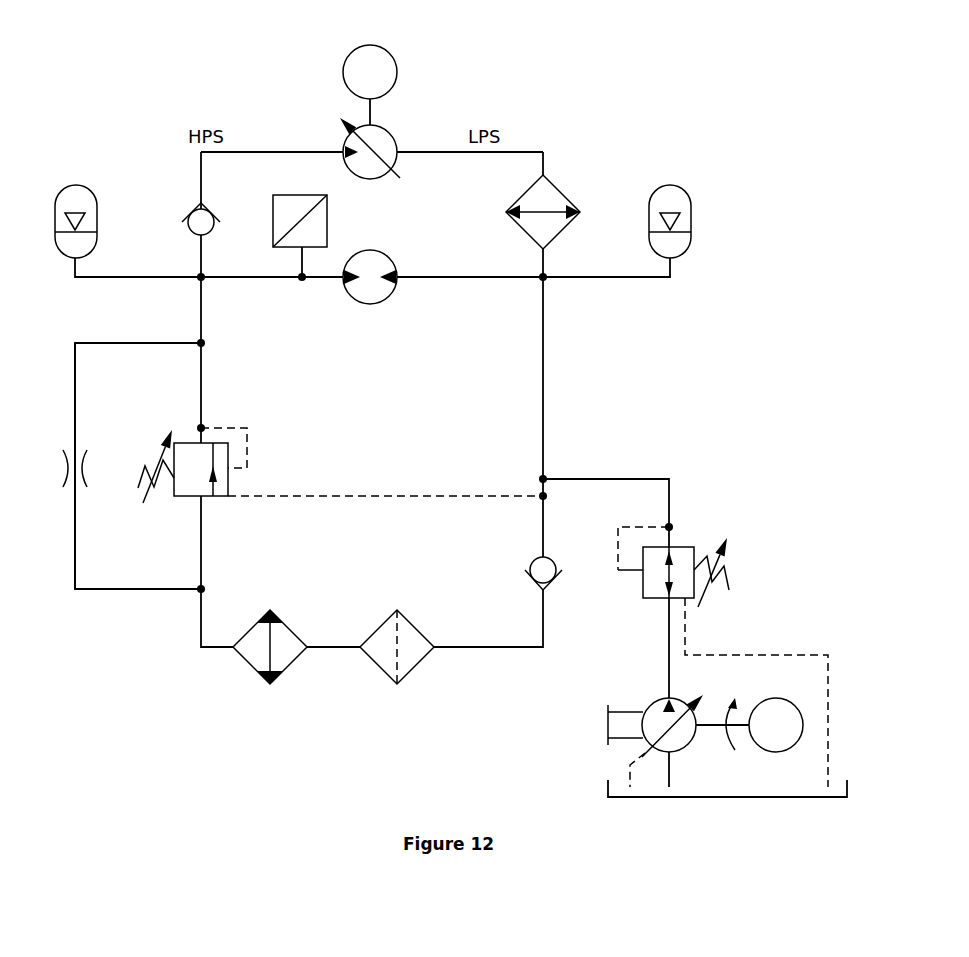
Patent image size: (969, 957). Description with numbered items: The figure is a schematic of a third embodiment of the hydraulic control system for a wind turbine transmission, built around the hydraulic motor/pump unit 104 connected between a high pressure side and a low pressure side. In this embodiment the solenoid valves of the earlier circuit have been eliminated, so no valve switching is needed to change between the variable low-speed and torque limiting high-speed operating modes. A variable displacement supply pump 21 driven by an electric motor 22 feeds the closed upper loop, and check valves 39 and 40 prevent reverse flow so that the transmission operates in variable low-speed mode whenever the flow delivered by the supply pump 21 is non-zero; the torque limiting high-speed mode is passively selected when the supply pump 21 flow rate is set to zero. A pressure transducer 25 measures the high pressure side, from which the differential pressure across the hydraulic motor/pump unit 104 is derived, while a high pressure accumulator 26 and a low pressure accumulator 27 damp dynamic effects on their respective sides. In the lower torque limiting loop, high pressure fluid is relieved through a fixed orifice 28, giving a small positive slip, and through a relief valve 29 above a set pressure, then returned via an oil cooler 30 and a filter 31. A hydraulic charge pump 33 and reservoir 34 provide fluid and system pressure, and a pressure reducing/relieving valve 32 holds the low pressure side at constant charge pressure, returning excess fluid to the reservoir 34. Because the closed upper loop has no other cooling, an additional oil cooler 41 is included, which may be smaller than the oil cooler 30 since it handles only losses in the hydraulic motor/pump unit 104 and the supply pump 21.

The variable displacement supply pump 21 is at (388, 132).
The electric motor 22 is at (387, 52).
The pressure transducer 25 is at (288, 193).
The high pressure accumulator 26 is at (78, 185).
The low pressure accumulator 27 is at (673, 186).
The fixed orifice 28 is at (63, 450).
The relief valve 29 is at (180, 497).
The oil cooler 30 is at (272, 611).
The filter 31 is at (400, 611).
The pressure reducing/relieving valve 32 is at (683, 542).
The hydraulic charge pump 33 is at (658, 700).
The reservoir 34 is at (737, 797).
The check valve 39 is at (550, 585).
The check valve 40 is at (212, 200).
The oil cooler 41 is at (570, 204).
The hydraulic motor/pump unit 104 is at (388, 256).